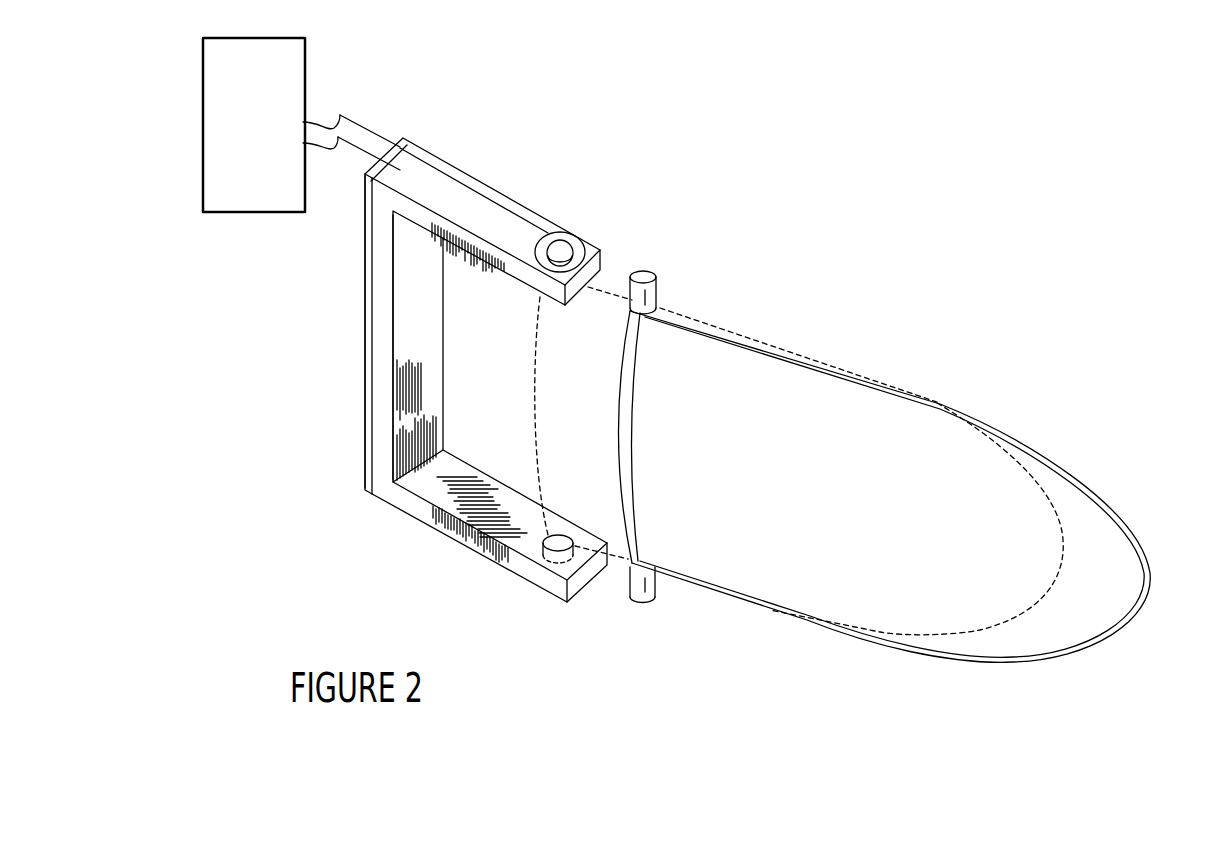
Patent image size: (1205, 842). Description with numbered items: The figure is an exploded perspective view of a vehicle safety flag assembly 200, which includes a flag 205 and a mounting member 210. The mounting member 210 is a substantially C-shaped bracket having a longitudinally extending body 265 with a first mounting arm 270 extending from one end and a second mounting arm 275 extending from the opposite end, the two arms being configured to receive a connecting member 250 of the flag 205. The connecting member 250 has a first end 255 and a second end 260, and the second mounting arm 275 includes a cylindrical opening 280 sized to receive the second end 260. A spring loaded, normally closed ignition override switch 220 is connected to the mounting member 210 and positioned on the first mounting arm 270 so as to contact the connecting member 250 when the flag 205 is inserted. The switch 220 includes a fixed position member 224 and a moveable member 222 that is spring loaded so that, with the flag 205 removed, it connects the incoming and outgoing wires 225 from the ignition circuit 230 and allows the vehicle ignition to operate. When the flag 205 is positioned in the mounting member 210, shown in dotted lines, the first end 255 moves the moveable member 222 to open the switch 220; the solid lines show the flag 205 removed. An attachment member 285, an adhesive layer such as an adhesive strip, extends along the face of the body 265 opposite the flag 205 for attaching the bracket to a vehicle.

The vehicle safety flag assembly 200 is at (575, 650).
The flag 205 is at (1060, 475).
The mounting member 210 is at (440, 153).
The switch 220 is at (591, 219).
The moveable member 222 is at (560, 253).
The fixed position member 224 is at (565, 243).
The incoming and outgoing wires 225 is at (357, 147).
The ignition circuit 230 is at (305, 104).
The connecting member 250 is at (657, 312).
The first end 255 is at (645, 275).
The second end 260 is at (623, 603).
The longitudinally extending body 265 is at (387, 365).
The first mounting arm 270 is at (482, 263).
The second mounting arm 275 is at (470, 482).
The cylindrical opening 280 is at (558, 550).
The attachment member 285 is at (367, 377).